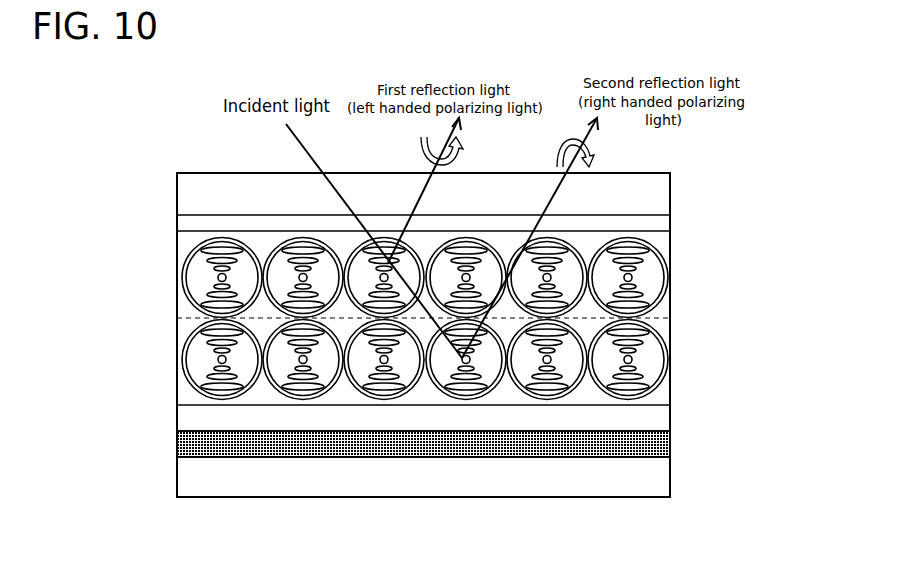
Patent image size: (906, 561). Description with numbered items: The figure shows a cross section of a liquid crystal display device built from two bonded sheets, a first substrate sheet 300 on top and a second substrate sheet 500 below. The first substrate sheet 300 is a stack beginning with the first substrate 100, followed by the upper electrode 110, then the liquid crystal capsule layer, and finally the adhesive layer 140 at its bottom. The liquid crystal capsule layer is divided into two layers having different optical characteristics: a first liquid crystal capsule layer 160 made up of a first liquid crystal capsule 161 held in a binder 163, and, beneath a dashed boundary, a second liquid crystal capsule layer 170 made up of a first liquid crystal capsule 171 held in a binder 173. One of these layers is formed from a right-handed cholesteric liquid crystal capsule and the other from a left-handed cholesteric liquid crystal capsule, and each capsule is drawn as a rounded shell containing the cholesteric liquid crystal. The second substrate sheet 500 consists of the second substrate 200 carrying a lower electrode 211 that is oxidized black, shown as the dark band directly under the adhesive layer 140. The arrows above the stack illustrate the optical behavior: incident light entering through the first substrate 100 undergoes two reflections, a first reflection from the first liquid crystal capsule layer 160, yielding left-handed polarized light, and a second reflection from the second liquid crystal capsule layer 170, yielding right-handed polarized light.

The first substrate 100 is at (670, 192).
The upper electrode 110 is at (670, 222).
The first liquid crystal capsule layer 160 is at (176, 233).
The first liquid crystal capsule 161 is at (664, 258).
The binder 163 is at (660, 306).
The second liquid crystal capsule layer 170 is at (176, 323).
The first liquid crystal capsule 171 is at (664, 343).
The binder 173 is at (660, 389).
The adhesive layer 140 is at (670, 412).
The first substrate sheet 300 is at (115, 177).
The second substrate sheet 500 is at (168, 430).
The lower electrode 211 is at (670, 443).
The second substrate 200 is at (670, 475).